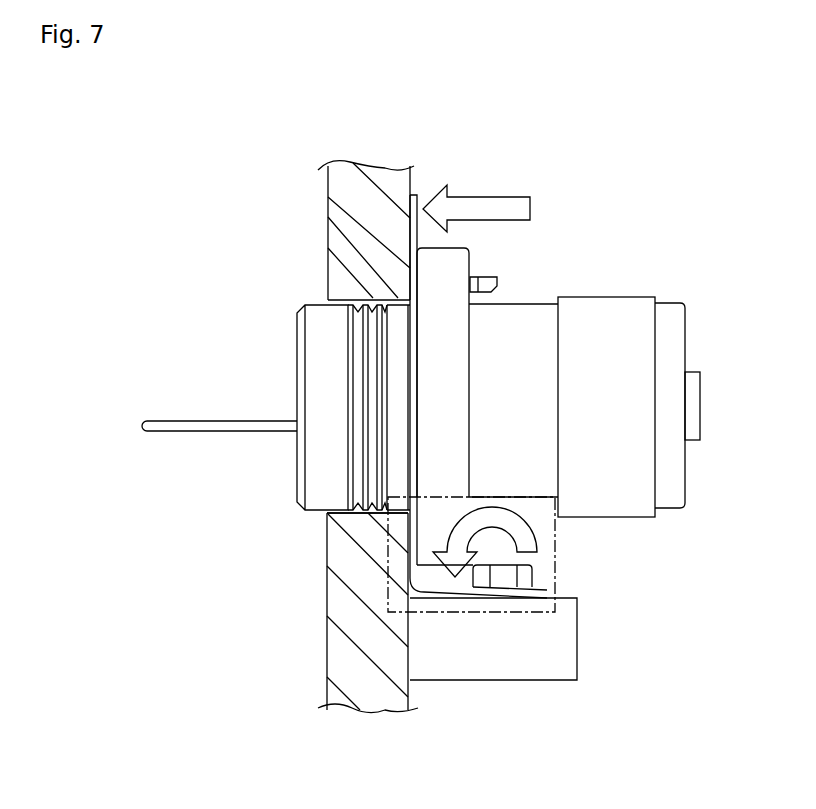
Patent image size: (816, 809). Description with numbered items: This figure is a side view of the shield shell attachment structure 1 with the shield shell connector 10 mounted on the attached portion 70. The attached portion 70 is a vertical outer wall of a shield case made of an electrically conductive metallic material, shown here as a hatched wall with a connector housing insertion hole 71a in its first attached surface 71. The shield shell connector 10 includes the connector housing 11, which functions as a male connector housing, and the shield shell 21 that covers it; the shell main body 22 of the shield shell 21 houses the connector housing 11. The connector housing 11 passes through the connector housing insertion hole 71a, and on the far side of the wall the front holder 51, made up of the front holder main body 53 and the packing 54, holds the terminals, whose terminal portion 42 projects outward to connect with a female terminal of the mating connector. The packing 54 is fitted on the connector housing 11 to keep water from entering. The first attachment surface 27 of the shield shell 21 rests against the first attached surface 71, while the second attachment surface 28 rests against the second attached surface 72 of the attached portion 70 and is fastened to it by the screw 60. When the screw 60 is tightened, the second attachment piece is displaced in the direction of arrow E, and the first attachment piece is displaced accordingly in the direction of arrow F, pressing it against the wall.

The shield shell attachment structure 1 is at (563, 299).
The shield shell connector 10 is at (664, 189).
The connector housing 11 is at (398, 475).
The shield shell 21 is at (584, 361).
The shell main body 22 is at (608, 295).
The first attachment surface 27 is at (328, 210).
The second attachment surface 28 is at (507, 600).
The terminal portion 42 is at (170, 420).
The front holder 51 is at (305, 371).
The front holder main body 53 is at (297, 358).
The packing 54 is at (357, 455).
The screw 60 is at (527, 578).
The attached portion 70 is at (333, 598).
The first attached surface 71 is at (412, 192).
The connector housing insertion hole 71a is at (328, 513).
The second attached surface 72 is at (550, 597).
The arrow E is at (540, 538).
The arrow F is at (495, 195).